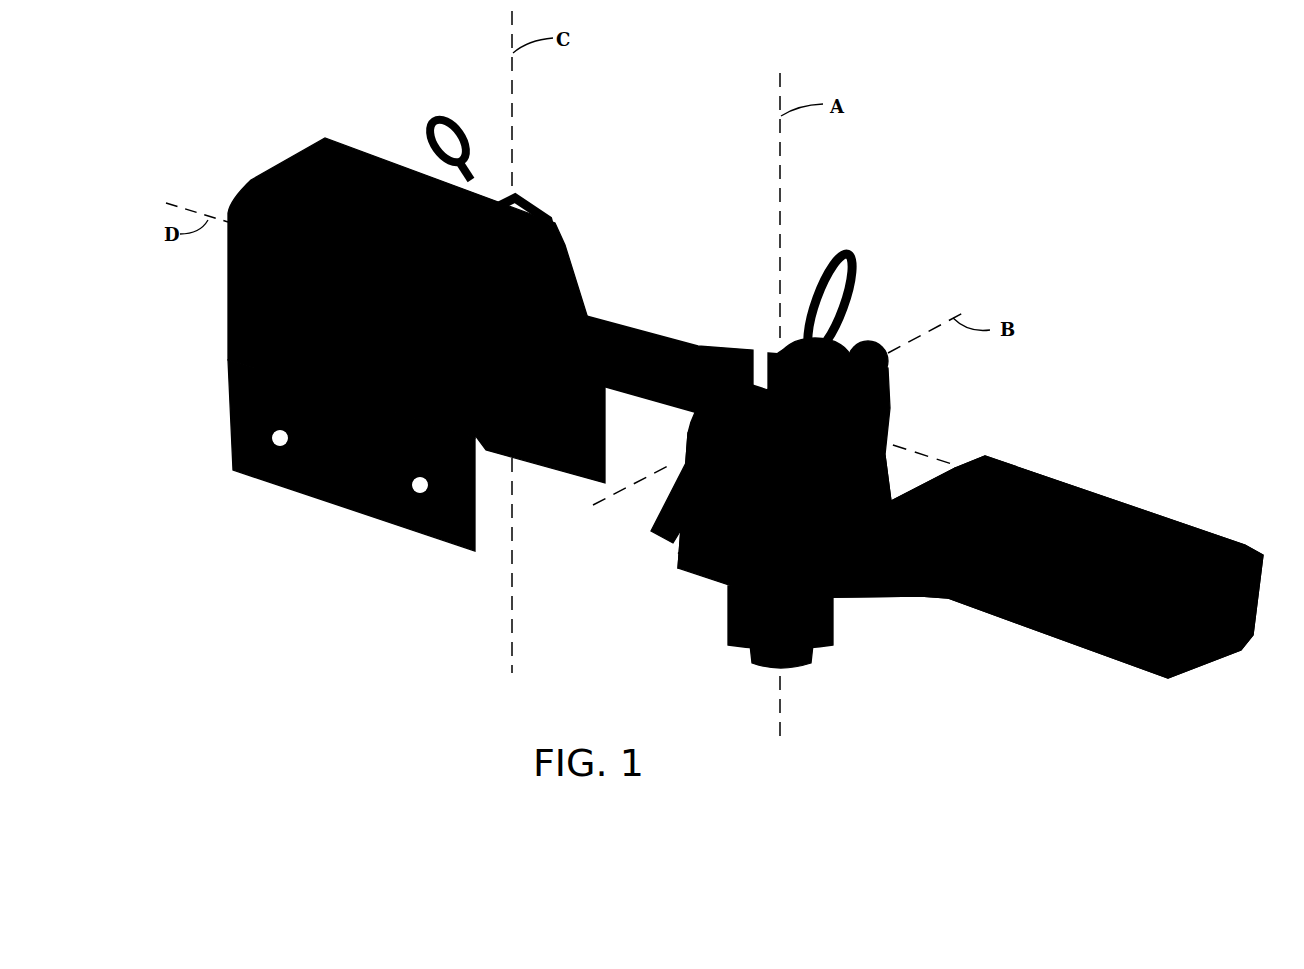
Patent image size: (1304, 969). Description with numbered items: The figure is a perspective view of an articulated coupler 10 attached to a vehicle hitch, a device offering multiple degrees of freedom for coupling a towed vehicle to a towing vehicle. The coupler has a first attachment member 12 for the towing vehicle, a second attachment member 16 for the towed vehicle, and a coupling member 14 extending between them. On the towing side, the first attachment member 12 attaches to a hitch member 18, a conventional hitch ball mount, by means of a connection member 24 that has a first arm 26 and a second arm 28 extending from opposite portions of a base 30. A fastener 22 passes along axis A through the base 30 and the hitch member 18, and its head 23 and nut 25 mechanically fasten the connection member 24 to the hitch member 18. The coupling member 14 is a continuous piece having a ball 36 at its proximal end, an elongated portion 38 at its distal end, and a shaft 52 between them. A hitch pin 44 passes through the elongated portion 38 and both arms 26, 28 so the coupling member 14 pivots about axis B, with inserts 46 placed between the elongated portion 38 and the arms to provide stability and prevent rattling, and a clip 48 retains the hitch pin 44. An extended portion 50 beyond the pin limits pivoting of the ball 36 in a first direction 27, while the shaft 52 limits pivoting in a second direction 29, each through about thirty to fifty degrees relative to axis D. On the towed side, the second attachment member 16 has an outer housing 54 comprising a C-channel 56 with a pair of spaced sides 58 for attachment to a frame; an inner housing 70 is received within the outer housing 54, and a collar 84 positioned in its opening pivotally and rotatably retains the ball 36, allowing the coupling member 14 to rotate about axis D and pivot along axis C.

The articulated coupler 10 is at (1082, 145).
The first attachment member 12 is at (885, 277).
The coupling member 14 is at (677, 280).
The second attachment member 16 is at (520, 165).
The hitch member 18 is at (1060, 495).
The fastener 22 is at (797, 647).
The head 23 is at (843, 593).
The connection member 24 is at (885, 422).
The nut 25 is at (810, 612).
The first arm 26 is at (703, 570).
The first direction 27 is at (577, 518).
The second arm 28 is at (870, 470).
The second direction 29 is at (542, 542).
The base 30 is at (883, 587).
The ball 36 is at (545, 285).
The elongated portion 38 is at (770, 370).
The hitch pin 44 is at (663, 513).
The inserts 46 is at (790, 330).
The clip 48 is at (825, 250).
The extended portion 50 is at (840, 373).
The shaft 52 is at (590, 315).
The outer housing 54 is at (320, 128).
The C-channel 56 is at (320, 493).
The sides 58 is at (388, 505).
The inner housing 70 is at (530, 213).
The collar 84 is at (553, 233).